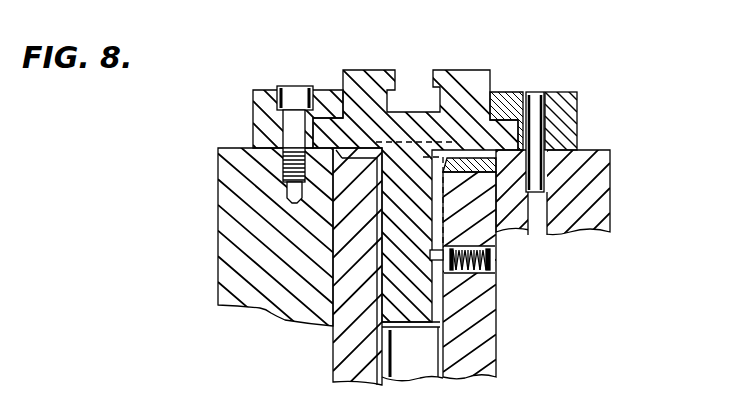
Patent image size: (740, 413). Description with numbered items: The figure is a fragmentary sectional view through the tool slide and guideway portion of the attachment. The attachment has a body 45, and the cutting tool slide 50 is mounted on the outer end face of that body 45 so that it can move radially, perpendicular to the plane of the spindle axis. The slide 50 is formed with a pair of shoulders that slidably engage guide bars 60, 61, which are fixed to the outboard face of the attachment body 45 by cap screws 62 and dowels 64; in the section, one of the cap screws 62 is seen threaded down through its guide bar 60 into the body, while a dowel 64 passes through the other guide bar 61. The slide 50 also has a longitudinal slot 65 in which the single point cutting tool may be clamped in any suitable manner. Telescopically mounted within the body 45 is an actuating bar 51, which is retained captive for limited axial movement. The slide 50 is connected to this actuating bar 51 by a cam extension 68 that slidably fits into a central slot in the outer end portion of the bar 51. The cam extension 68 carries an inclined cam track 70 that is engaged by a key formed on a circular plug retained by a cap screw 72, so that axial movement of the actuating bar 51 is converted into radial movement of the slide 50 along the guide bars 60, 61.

The body 45 is at (614, 180).
The tool slide 50 is at (452, 72).
The actuating bar 51 is at (330, 355).
The guide bar 60 is at (257, 91).
The guide bar 61 is at (577, 110).
The cap screw 62 is at (298, 96).
The dowel 64 is at (537, 102).
The longitudinal slot 65 is at (400, 102).
The cam extension 68 is at (434, 312).
The inclined cam track 70 is at (440, 222).
The cap screw 72 is at (491, 263).